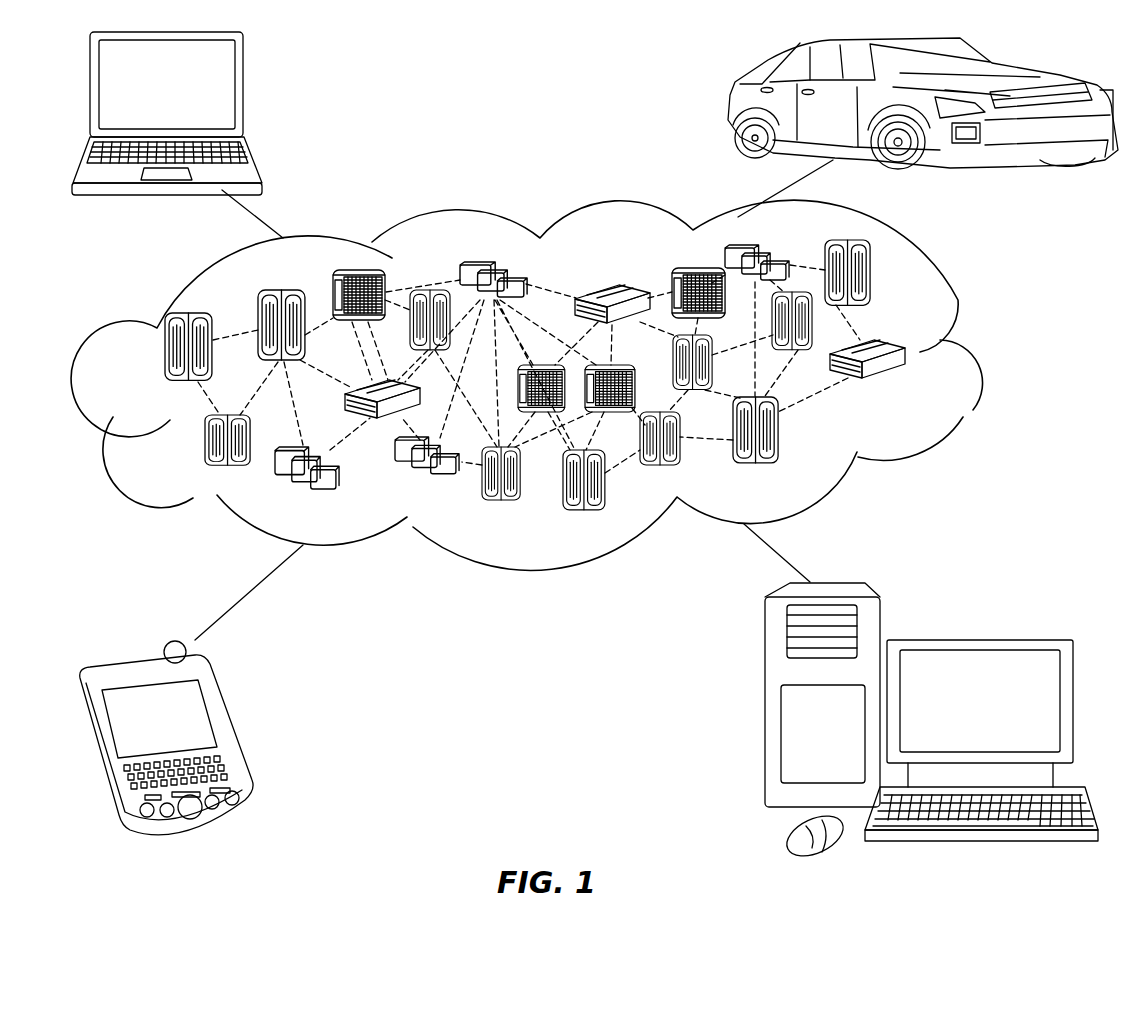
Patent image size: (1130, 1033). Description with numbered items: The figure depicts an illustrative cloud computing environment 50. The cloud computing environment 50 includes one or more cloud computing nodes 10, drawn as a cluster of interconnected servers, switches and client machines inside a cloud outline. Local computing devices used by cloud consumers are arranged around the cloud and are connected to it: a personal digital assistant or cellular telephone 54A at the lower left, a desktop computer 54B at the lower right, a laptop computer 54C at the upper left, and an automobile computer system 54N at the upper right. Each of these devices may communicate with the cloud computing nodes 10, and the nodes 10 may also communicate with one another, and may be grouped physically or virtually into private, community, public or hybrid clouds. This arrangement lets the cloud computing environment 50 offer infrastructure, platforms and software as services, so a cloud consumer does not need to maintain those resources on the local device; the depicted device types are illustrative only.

The cloud computing nodes 10 is at (925, 390).
The cloud computing environment 50 is at (977, 358).
The personal digital assistant (PDA) or cellular telephone 54A is at (228, 730).
The desktop computer 54B is at (977, 638).
The laptop computer 54C is at (245, 92).
The automobile computer system 54N is at (728, 106).